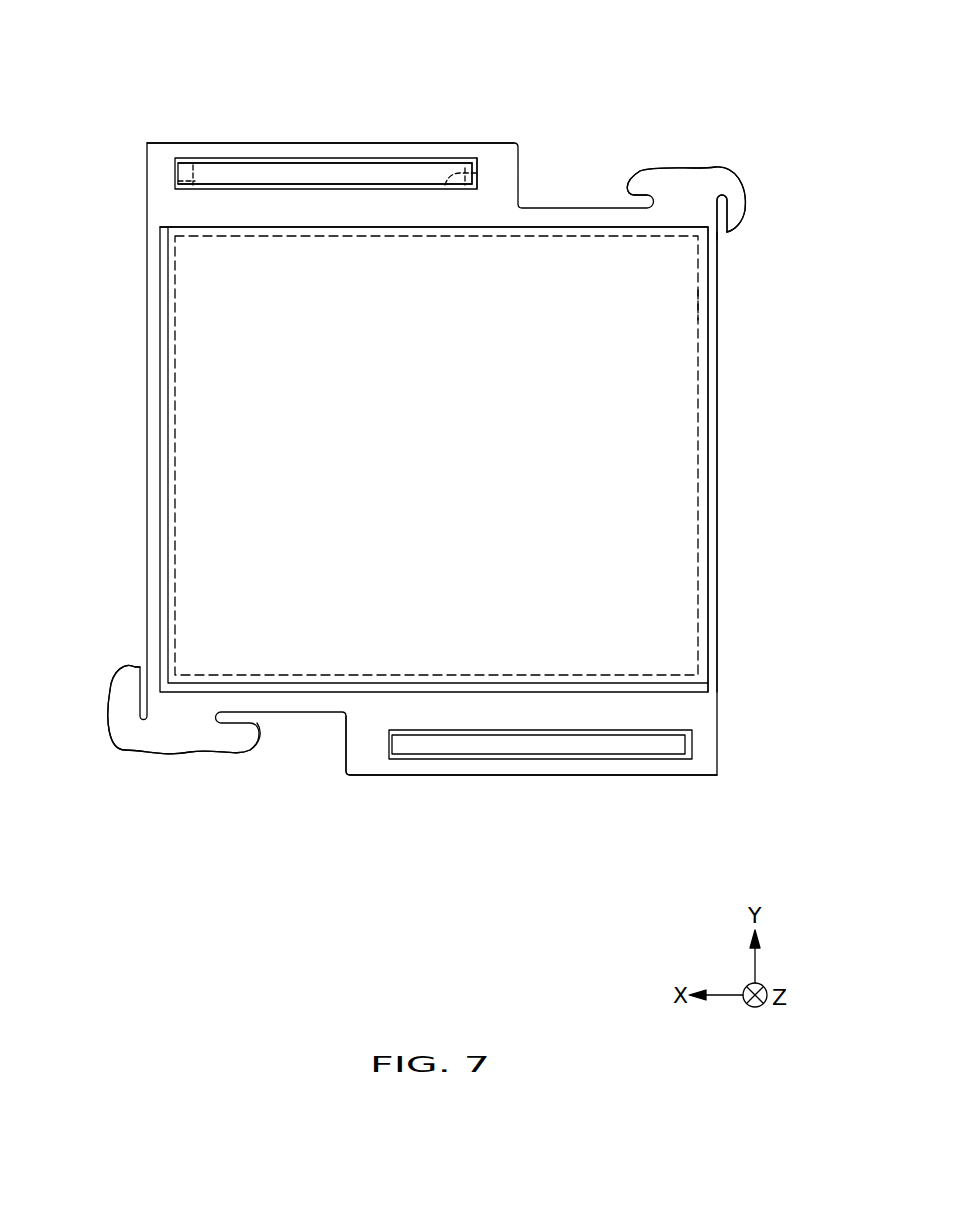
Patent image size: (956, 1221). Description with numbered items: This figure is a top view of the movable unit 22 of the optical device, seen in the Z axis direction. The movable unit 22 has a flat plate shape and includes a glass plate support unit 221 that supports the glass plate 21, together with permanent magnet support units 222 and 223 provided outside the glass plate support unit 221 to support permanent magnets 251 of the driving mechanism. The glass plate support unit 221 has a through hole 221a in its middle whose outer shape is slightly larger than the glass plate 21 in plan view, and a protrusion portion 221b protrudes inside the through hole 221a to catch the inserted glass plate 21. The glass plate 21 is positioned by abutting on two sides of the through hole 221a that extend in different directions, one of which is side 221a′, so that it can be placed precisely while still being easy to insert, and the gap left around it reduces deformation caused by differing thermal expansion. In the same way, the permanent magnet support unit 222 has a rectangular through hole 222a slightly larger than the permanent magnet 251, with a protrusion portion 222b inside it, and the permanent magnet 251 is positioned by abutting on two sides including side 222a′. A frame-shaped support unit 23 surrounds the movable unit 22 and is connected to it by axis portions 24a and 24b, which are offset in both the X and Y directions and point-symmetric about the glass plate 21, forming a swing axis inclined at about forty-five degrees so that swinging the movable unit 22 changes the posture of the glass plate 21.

The glass plate 21 is at (652, 532).
The movable unit 22 is at (147, 312).
The glass plate support unit 221 is at (152, 413).
The through hole 221a is at (708, 410).
The side of through hole 221a′ is at (558, 227).
The protrusion portion 221b is at (700, 304).
The permanent magnet support unit 222 is at (507, 143).
The through hole 222a is at (272, 158).
The side of through hole 222a′ is at (478, 172).
The protrusion portion 222b is at (193, 143).
The permanent magnet support unit 223 is at (366, 766).
The support unit 23 is at (717, 178).
The axis portion 24a is at (681, 200).
The axis portion 24b is at (180, 717).
The permanent magnet 251 is at (320, 176).